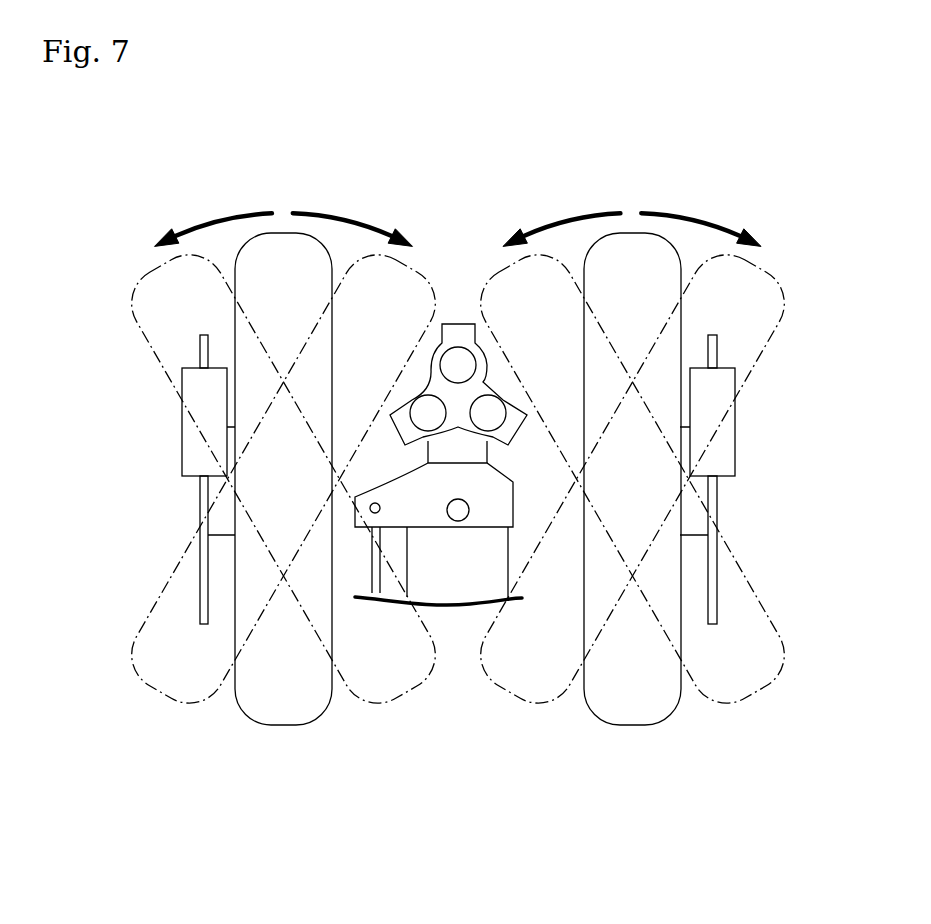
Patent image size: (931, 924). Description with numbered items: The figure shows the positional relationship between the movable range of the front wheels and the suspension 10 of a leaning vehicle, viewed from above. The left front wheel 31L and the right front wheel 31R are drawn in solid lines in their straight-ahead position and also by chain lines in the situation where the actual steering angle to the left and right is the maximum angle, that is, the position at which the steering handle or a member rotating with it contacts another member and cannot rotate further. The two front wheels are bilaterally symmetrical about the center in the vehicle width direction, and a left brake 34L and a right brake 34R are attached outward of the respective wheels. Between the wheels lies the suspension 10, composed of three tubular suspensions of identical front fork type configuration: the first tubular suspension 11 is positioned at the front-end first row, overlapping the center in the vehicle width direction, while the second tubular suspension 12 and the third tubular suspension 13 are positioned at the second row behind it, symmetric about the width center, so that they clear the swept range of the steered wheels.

The suspension 10 is at (462, 223).
The first tubular suspension 11 is at (455, 355).
The second tubular suspension 12 is at (420, 403).
The third tubular suspension 13 is at (492, 407).
The left front wheel 31L is at (291, 749).
The right front wheel 31R is at (639, 766).
The left brake 34L is at (159, 462).
The right brake 34R is at (756, 461).